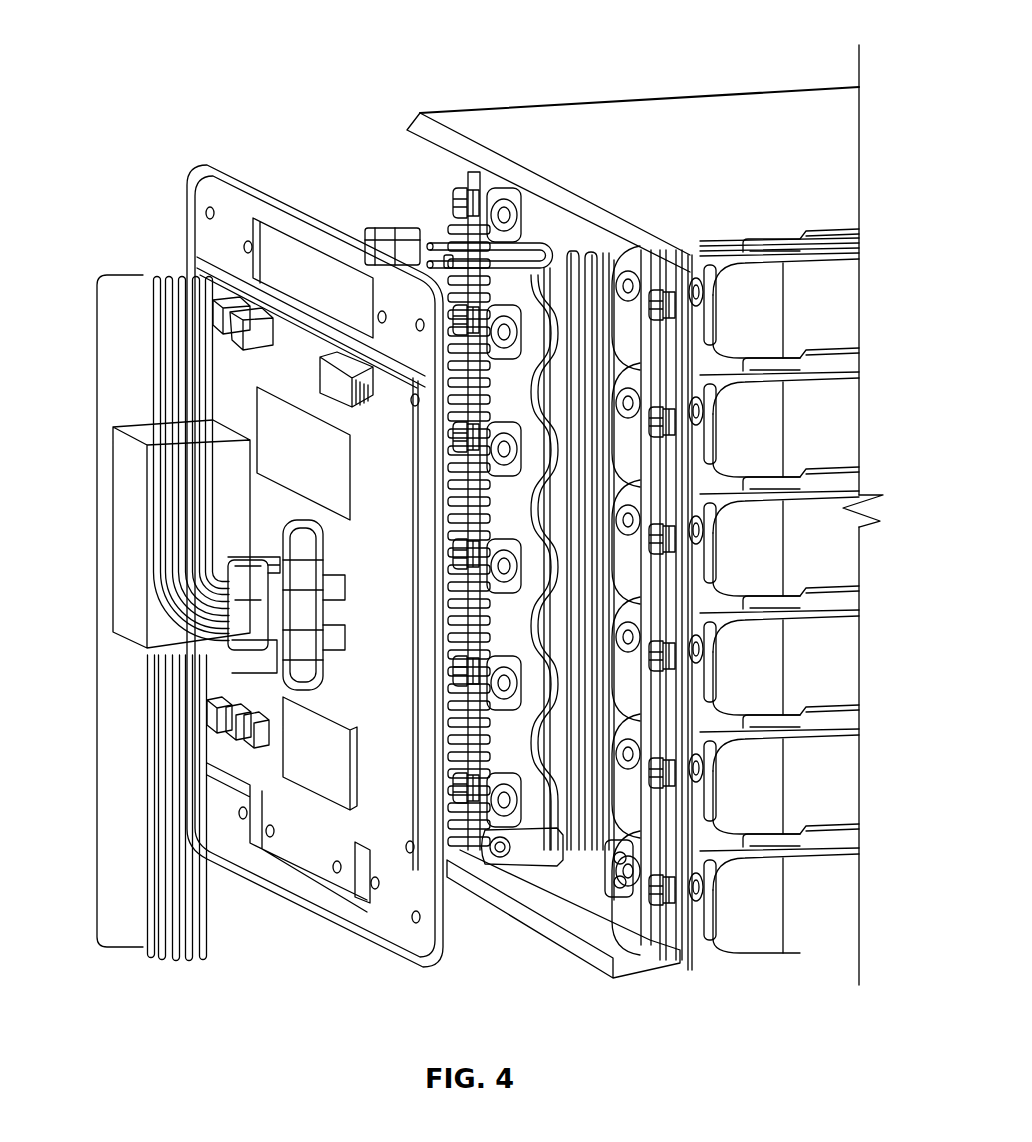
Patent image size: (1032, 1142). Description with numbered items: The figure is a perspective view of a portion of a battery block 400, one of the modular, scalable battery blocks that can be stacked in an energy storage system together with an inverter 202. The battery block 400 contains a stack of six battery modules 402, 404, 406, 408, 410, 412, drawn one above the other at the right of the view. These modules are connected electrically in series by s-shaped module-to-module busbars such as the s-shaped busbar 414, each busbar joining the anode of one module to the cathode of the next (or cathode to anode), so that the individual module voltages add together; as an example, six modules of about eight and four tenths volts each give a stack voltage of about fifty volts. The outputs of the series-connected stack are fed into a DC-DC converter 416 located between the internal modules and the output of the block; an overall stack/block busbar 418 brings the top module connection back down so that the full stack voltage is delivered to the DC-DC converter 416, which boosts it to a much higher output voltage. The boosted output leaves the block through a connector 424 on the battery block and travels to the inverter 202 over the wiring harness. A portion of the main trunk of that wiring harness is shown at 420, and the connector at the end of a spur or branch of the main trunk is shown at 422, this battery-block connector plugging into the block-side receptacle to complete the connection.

The battery block 400 is at (132, 42).
The inverter 202 is at (669, 515).
The battery module 402 is at (798, 325).
The battery module 404 is at (798, 433).
The battery module 406 is at (798, 557).
The battery module 408 is at (798, 680).
The battery module 410 is at (798, 787).
The battery module 412 is at (798, 910).
The s-shaped busbar 414 is at (622, 600).
The DC-DC converter 416 is at (268, 533).
The overall stack/block busbar 418 is at (575, 740).
The main trunk of the wiring harness 420 is at (97, 536).
The connector at an end of a spur 422 is at (250, 613).
The connector on the battery block 424 is at (297, 637).